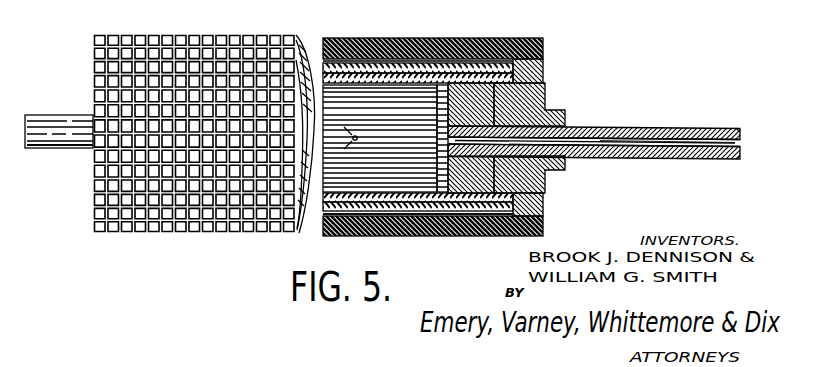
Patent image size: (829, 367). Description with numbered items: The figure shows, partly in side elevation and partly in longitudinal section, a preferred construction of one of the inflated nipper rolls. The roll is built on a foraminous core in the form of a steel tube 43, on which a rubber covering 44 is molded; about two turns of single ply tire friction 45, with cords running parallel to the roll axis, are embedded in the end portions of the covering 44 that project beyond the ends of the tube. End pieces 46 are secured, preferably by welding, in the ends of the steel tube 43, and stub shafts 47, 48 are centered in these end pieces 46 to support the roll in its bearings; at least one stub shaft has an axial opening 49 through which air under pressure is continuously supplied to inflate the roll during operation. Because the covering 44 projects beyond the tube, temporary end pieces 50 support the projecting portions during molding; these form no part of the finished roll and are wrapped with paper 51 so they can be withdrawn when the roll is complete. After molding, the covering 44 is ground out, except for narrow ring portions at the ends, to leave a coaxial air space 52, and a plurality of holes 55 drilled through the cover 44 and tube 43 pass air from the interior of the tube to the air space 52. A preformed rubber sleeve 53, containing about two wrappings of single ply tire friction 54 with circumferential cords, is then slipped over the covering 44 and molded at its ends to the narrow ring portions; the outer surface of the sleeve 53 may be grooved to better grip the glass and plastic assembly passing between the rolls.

The steel tube 43 is at (388, 192).
The rubber covering 44 is at (545, 62).
The tire friction 45 is at (546, 78).
The end pieces 46 is at (466, 212).
The stub shaft 47 is at (634, 127).
The stub shaft 48 is at (55, 115).
The axial opening 49 is at (666, 158).
The temporary end pieces 50 is at (546, 182).
The paper 51 is at (543, 205).
The air space 52 is at (384, 215).
The rubber sleeve 53 is at (541, 45).
The tire friction 54 is at (541, 230).
The holes 55 is at (355, 136).